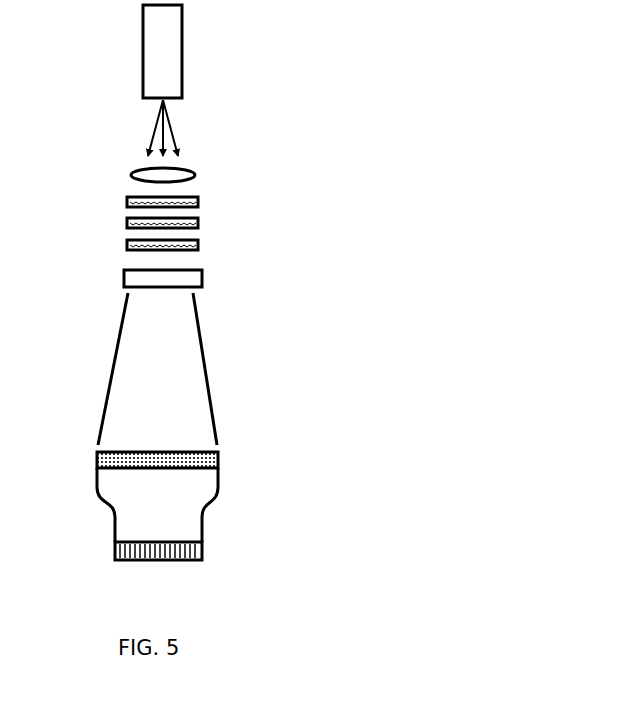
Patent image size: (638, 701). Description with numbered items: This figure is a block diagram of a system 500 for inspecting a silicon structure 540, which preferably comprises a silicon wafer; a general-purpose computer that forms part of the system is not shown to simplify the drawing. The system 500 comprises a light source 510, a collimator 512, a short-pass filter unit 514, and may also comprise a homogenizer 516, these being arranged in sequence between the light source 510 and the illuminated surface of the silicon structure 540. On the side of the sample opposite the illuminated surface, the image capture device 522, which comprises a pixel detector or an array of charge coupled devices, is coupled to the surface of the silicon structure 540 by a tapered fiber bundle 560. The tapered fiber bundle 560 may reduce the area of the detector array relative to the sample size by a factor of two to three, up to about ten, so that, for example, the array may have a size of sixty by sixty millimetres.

The system 500 is at (366, 174).
The light source 510 is at (184, 55).
The collimator 512 is at (196, 171).
The short-pass filter unit 514 is at (216, 193).
The homogenizer 516 is at (203, 280).
The silicon structure 540 is at (219, 460).
The tapered fiber bundle 560 is at (98, 497).
The image capture device 522 is at (113, 549).